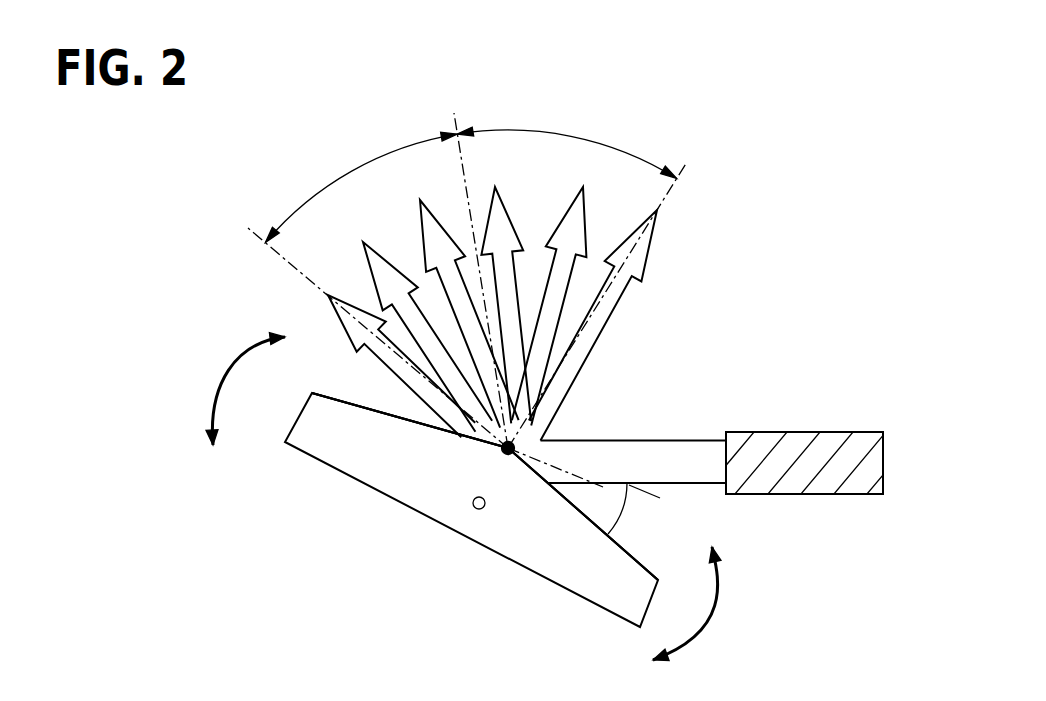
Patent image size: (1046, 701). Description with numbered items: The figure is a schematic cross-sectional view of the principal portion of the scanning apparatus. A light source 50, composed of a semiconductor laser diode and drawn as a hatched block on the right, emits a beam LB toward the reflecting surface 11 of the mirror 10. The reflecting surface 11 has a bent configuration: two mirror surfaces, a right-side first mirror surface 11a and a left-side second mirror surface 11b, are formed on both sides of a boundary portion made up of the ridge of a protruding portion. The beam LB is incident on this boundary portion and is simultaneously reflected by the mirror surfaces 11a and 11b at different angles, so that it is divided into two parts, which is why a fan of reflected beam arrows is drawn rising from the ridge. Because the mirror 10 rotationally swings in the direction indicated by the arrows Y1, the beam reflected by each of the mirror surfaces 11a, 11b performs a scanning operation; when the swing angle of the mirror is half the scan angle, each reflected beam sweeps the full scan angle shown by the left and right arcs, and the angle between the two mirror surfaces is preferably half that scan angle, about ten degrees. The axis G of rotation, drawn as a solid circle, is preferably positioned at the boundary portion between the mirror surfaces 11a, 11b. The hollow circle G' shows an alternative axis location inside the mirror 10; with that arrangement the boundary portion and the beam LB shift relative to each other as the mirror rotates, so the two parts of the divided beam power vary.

The mirror 10 is at (392, 473).
The reflecting surface 11 is at (346, 402).
The first mirror surface 11a is at (617, 540).
The second mirror surface 11b is at (370, 410).
The light source 50 is at (802, 447).
The beam LB is at (677, 452).
The axis of rotation G is at (572, 394).
The alternative axis of rotation position G' is at (466, 563).
The swing direction Y1 is at (469, 497).